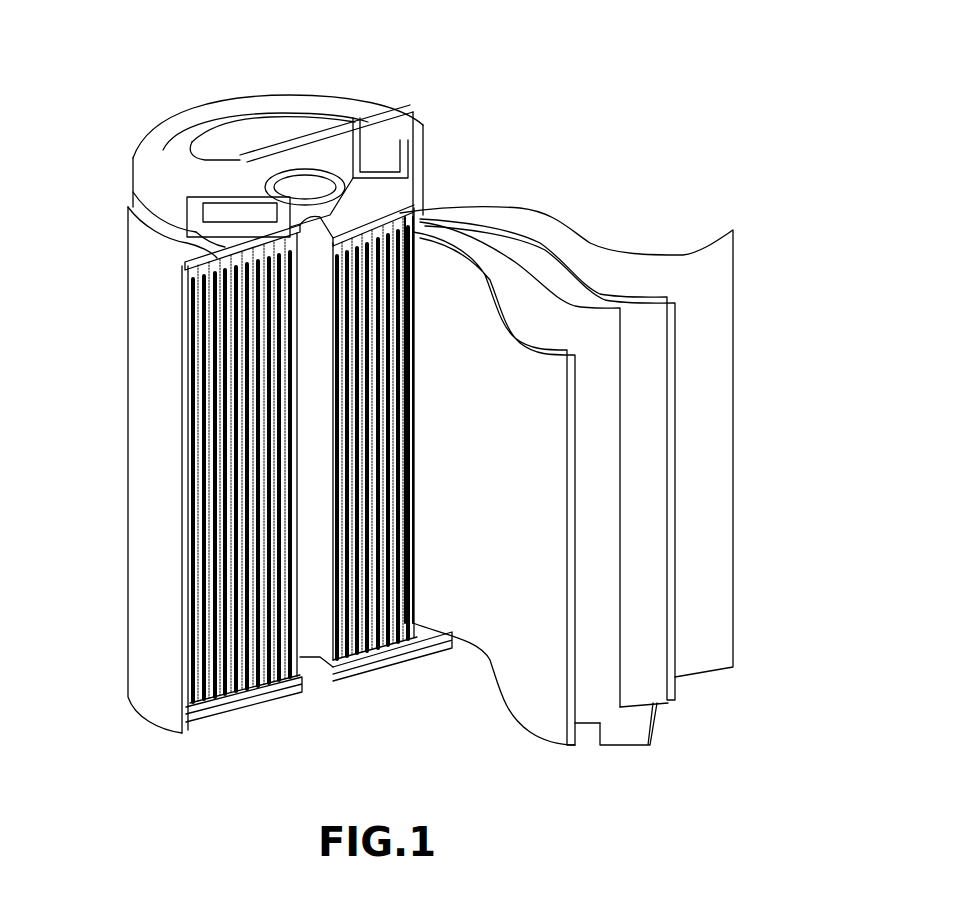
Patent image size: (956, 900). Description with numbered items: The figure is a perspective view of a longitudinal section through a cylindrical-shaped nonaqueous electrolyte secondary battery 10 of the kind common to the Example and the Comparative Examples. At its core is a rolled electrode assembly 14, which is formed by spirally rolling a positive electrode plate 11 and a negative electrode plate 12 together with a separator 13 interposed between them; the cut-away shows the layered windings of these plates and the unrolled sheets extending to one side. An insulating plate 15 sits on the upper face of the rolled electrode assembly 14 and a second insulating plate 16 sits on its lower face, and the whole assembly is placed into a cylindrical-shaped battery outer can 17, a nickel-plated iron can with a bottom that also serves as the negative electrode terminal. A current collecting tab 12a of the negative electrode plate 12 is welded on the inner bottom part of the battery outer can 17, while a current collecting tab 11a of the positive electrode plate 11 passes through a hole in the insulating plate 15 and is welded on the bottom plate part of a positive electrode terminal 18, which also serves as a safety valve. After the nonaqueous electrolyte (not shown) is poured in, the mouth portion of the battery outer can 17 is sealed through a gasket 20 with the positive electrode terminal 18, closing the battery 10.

The cylindrical-shaped nonaqueous electrolyte secondary battery 10 is at (607, 58).
The positive electrode plate 11 is at (562, 390).
The current collecting tab of the positive electrode plate 11a is at (187, 243).
The negative electrode plate 12 is at (653, 568).
The current collecting tab of the negative electrode plate 12a is at (663, 720).
The separator 13 is at (710, 260).
The rolled electrode assembly 14 is at (197, 470).
The insulating plate 15 is at (190, 268).
The insulating plate 16 is at (213, 687).
The battery outer can 17 is at (143, 547).
The positive electrode terminal 18 is at (263, 117).
The gasket 20 is at (133, 155).